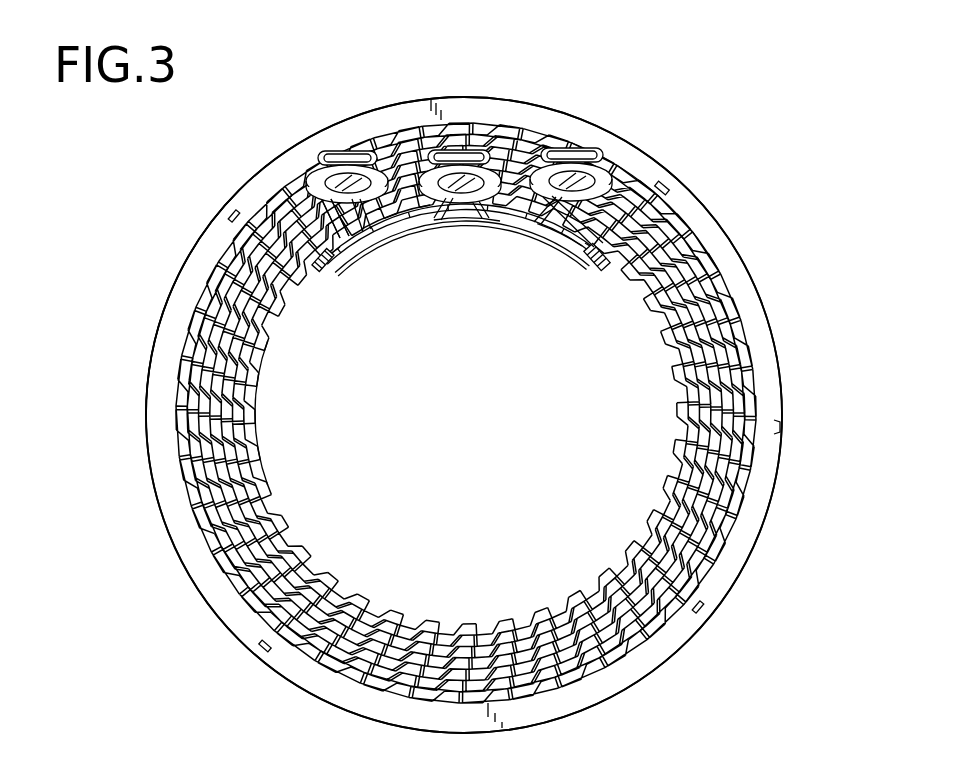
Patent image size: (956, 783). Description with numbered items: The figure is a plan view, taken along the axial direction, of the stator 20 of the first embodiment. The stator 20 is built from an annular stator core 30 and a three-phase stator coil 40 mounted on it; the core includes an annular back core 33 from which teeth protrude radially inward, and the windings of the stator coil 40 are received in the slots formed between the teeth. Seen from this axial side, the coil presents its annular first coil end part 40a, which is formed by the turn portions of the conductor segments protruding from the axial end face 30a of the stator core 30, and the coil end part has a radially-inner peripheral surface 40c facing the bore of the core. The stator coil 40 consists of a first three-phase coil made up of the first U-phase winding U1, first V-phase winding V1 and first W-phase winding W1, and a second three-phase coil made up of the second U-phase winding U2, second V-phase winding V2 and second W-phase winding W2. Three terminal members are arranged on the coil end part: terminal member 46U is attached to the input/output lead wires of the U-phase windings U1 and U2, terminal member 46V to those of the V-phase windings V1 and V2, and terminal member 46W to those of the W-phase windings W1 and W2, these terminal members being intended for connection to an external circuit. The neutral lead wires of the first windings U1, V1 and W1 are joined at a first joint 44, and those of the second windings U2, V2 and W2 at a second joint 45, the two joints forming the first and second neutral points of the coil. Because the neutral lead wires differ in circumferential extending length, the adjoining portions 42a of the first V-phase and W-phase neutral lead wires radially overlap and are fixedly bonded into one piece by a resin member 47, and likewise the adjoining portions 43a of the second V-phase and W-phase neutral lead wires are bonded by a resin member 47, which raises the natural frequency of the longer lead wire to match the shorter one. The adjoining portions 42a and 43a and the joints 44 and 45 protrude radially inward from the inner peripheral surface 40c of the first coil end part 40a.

The stator 20 is at (700, 111).
The stator core 30 is at (224, 209).
The axial end face of the stator core 30a is at (190, 268).
The back core 33 is at (278, 173).
The stator coil 40 is at (490, 412).
The first coil end part 40a is at (680, 202).
The radially-inner peripheral surface of the first coil end part 40c is at (255, 400).
The adjoining portions 42a is at (556, 236).
The adjoining portions 43a is at (368, 236).
The first joint 44 is at (579, 274).
The second joint 45 is at (334, 272).
The terminal member 46U is at (586, 151).
The terminal member 46V is at (472, 148).
The terminal member 46W is at (345, 153).
The resin member 47 is at (357, 244).
The first U-phase winding U1 is at (595, 270).
The second U-phase winding U2 is at (318, 268).
The first V-phase winding V1 is at (571, 258).
The second V-phase winding V2 is at (346, 250).
The first W-phase winding W1 is at (524, 232).
The second W-phase winding W2 is at (372, 222).